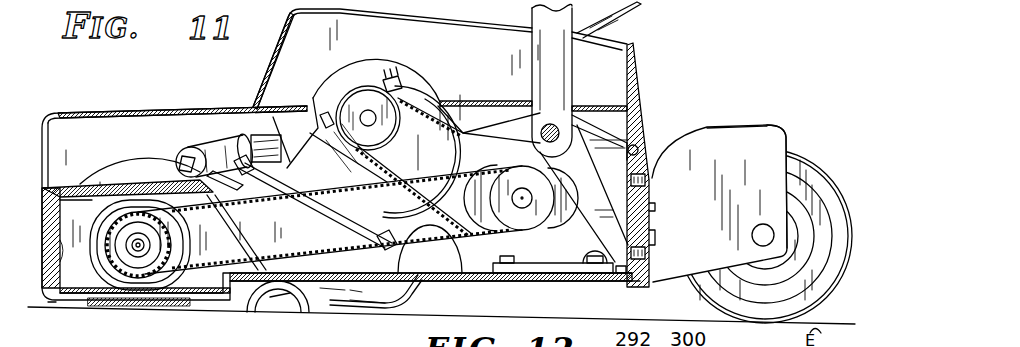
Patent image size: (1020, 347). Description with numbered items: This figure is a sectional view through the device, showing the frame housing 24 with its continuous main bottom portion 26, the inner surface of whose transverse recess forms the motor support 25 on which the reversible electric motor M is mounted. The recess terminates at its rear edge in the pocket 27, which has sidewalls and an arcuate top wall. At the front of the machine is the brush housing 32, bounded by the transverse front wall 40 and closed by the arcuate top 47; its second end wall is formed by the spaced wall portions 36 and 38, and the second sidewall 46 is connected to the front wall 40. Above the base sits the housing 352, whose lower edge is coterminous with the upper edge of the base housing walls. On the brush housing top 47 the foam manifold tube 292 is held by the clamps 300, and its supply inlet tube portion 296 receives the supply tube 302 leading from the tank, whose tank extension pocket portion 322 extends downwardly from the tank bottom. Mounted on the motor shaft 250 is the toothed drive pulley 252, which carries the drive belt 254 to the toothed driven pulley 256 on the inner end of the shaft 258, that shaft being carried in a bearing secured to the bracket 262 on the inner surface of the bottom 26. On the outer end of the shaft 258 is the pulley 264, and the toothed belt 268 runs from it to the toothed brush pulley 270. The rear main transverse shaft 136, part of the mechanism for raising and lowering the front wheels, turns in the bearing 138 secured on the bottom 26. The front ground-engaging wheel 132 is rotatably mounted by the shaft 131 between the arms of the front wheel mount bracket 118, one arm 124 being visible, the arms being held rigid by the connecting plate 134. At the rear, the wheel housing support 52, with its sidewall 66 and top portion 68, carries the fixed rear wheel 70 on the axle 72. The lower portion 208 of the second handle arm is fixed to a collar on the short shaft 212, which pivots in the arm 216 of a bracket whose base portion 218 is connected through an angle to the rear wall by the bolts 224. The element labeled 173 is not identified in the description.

The housing 352 is at (285, 52).
The brush housing 32 is at (123, 158).
The foam manifold tube 292 is at (183, 144).
The supply inlet tube portion 296 is at (222, 136).
The clamps 300 is at (187, 152).
The arcuate top 47 is at (100, 168).
The motor shaft 250 is at (355, 97).
The toothed drive pulley 252 is at (368, 116).
The reversible electric motor M is at (418, 90).
The drive belt 254 is at (452, 101).
The toothed driven pulley 256 is at (476, 144).
The motor support 25 is at (318, 213).
The pocket 27 is at (420, 192).
The shaft 258 is at (560, 244).
The pulley 264 is at (478, 240).
The toothed belt 268 is at (427, 280).
The bracket 262 is at (533, 262).
The continuous main bottom portion 26 is at (540, 282).
The rear main transverse shaft 136 is at (611, 282).
The lower portion 208 is at (558, 70).
The short shaft 212 is at (558, 128).
The arm 216 is at (606, 176).
The bracket base portion 218 is at (675, 185).
The latch 173 is at (648, 118).
The tank extension pocket portion 322 is at (642, 10).
The supply tube 302 is at (655, 62).
The top portion 68 is at (720, 125).
The wheel housing support 52 is at (748, 125).
The sidewall 66 is at (762, 143).
The fixed rear wheel 70 is at (808, 160).
The axle 72 is at (760, 224).
The bolts 224 is at (660, 172).
The frame housing 24 is at (655, 206).
The bearing 138 is at (652, 238).
The transverse front wall 40 is at (72, 263).
The wall portion 36 is at (72, 292).
The second sidewall 46 is at (135, 250).
The toothed brush pulley 270 is at (143, 265).
The wall portion 38 is at (212, 288).
The front ground-engaging wheel 132 is at (263, 305).
The shaft 131 is at (288, 294).
The arm 124 is at (337, 297).
The front wheel mount bracket 118 is at (355, 312).
The connecting plate 134 is at (387, 310).